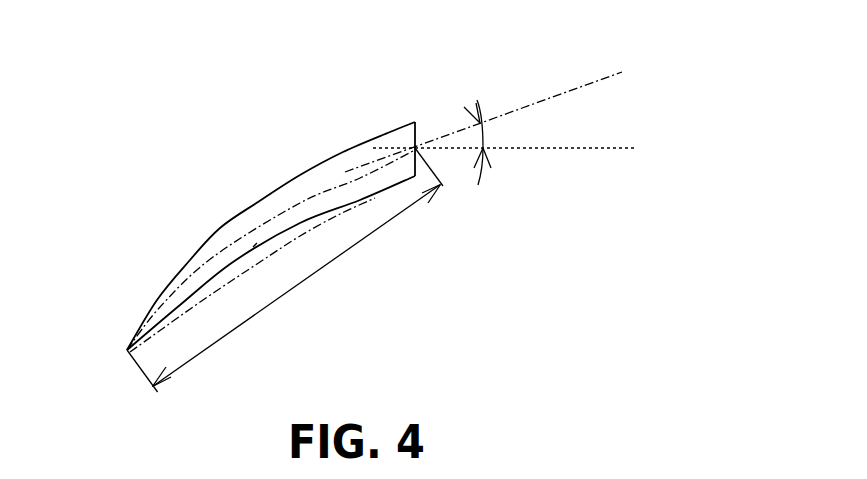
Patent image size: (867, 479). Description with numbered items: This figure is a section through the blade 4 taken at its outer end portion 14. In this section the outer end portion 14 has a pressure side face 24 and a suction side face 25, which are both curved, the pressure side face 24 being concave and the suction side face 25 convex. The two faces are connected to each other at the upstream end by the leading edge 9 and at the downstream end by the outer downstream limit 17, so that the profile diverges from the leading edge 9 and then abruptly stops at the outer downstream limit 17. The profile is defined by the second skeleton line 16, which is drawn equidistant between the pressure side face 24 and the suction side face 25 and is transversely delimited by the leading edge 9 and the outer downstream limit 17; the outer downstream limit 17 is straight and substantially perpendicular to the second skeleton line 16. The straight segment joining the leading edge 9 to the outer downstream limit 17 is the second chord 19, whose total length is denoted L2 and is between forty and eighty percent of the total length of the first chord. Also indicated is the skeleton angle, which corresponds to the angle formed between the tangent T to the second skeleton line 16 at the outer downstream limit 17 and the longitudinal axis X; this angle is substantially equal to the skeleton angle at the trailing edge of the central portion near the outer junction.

The blade 4 is at (208, 218).
The leading edge 9 is at (127, 350).
The outer end portion 14 is at (310, 180).
The second skeleton line 16 is at (200, 267).
The outer downstream limit 17 is at (417, 146).
The second chord 19 is at (203, 300).
The pressure side face 24 is at (253, 247).
The suction side face 25 is at (259, 198).
The total length of the second chord L2 is at (315, 272).
The tangent to the skeleton line T is at (574, 90).
The longitudinal axis X is at (566, 150).